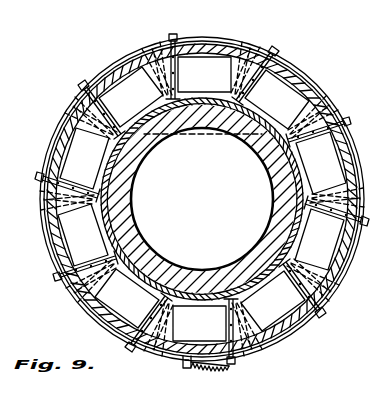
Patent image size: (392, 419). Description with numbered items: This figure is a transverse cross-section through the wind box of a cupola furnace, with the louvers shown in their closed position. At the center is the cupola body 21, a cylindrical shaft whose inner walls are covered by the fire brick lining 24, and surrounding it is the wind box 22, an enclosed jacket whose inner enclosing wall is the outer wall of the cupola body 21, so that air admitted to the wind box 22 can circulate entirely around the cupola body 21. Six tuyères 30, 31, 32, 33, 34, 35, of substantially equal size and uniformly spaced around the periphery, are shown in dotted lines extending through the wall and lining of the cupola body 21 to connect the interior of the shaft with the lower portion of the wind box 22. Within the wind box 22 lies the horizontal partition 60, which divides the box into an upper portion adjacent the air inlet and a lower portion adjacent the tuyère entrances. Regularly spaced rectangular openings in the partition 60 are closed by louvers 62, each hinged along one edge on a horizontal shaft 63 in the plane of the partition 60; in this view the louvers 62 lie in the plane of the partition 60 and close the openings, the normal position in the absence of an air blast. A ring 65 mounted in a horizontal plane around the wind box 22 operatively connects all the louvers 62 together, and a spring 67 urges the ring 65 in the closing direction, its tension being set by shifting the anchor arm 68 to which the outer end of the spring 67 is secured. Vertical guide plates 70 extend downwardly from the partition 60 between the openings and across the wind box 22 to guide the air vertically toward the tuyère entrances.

The cupola body 21 is at (114, 186).
The wind box 22 is at (304, 100).
The fire brick lining 24 is at (171, 132).
The tuyère 30 is at (152, 149).
The tuyère 31 is at (231, 133).
The tuyère 32 is at (277, 184).
The tuyère 33 is at (261, 262).
The tuyère 34 is at (195, 267).
The tuyère 35 is at (119, 215).
The horizontal partition 60 is at (324, 107).
The louver 62 is at (204, 65).
The shaft 63 is at (170, 37).
The ring 65 is at (242, 40).
The spring 67 is at (196, 371).
The anchor arm 68 is at (183, 362).
The vertical guide plate 70 is at (148, 61).